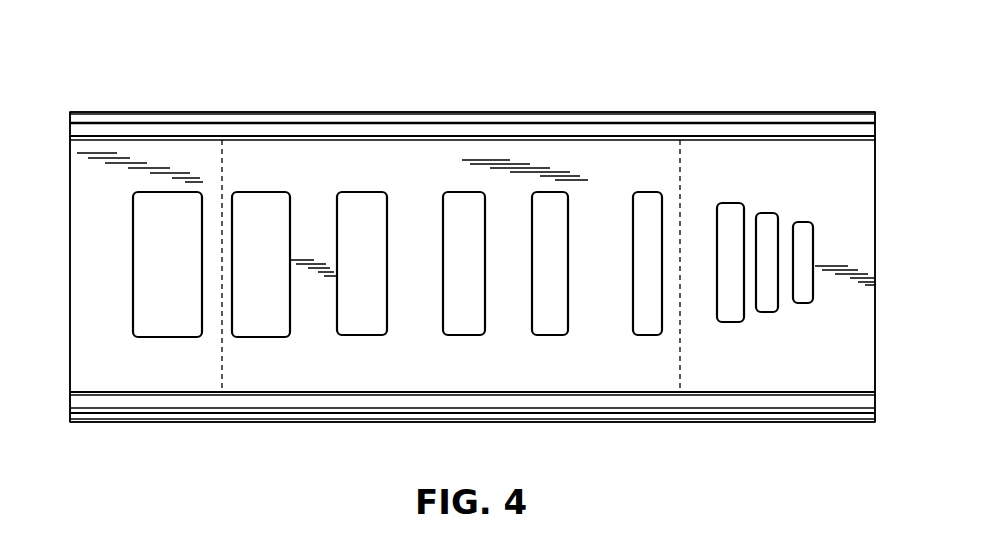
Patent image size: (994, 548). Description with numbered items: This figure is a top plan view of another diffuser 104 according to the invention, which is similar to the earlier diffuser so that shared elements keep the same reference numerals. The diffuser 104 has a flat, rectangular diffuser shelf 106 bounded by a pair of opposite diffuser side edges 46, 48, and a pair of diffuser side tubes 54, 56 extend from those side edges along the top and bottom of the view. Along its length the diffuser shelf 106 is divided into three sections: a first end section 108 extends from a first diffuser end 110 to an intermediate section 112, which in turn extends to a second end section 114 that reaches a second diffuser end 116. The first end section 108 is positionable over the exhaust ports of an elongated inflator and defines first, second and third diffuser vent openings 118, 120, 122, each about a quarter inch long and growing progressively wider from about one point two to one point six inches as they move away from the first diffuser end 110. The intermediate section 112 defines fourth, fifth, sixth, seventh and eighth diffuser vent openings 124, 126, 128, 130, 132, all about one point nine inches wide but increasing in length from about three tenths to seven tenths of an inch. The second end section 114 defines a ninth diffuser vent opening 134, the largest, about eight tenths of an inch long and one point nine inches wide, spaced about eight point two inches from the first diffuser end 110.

The diffuser 104 is at (447, 40).
The diffuser side edge 46 is at (370, 383).
The diffuser side edge 48 is at (305, 147).
The diffuser side tube 54 is at (473, 420).
The diffuser side tube 56 is at (373, 112).
The diffuser shelf 106 is at (584, 156).
The first end section 108 is at (743, 148).
The first diffuser end 110 is at (877, 148).
The intermediate section 112 is at (488, 143).
The second end section 114 is at (173, 148).
The second diffuser end 116 is at (69, 152).
The first diffuser vent opening 118 is at (798, 220).
The second diffuser vent opening 120 is at (762, 313).
The third diffuser vent opening 122 is at (728, 322).
The fourth diffuser vent opening 124 is at (642, 337).
The fifth diffuser vent opening 126 is at (540, 337).
The sixth diffuser vent opening 128 is at (450, 337).
The seventh diffuser vent opening 130 is at (342, 335).
The eighth diffuser vent opening 132 is at (243, 337).
The ninth diffuser vent opening 134 is at (150, 337).